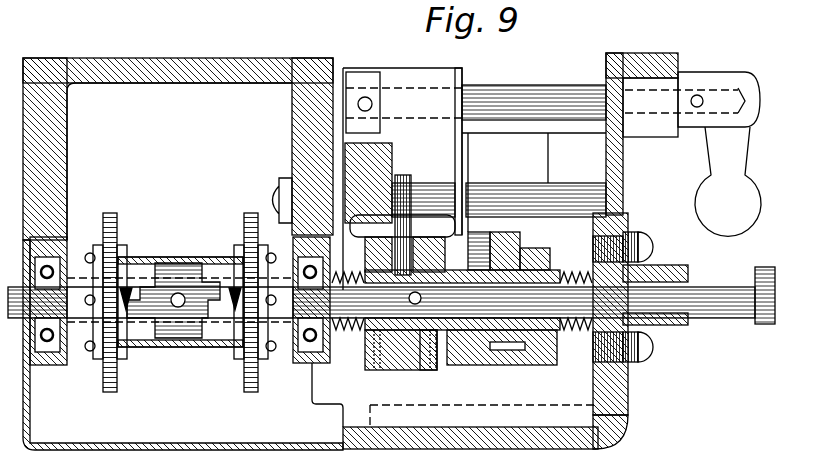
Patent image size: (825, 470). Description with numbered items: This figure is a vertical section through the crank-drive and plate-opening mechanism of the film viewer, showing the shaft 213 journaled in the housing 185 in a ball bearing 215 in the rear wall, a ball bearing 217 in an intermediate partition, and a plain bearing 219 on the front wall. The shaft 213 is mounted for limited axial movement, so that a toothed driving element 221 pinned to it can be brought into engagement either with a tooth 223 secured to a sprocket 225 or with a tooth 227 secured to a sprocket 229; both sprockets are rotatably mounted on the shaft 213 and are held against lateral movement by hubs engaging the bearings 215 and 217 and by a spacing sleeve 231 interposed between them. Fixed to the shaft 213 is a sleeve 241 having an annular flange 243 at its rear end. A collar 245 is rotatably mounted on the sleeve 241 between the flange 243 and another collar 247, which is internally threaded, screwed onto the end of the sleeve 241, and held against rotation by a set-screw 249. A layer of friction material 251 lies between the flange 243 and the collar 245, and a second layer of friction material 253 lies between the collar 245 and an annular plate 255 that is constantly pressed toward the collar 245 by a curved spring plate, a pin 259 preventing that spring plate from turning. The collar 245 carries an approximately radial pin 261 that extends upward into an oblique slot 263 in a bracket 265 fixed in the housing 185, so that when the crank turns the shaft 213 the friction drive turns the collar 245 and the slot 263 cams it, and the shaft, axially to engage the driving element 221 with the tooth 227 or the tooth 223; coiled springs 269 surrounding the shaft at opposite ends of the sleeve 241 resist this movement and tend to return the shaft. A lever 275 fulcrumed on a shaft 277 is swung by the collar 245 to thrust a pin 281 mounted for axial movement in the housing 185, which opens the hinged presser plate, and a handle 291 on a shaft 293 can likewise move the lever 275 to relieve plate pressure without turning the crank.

The housing 185 is at (55, 163).
The shaft 213 is at (130, 338).
The ball bearing 215 is at (68, 345).
The ball bearing 217 is at (294, 350).
The plain bearing 219 is at (662, 270).
The toothed driving element 221 is at (180, 335).
The tooth 223 is at (146, 262).
The sprocket 225 is at (112, 216).
The tooth 227 is at (238, 297).
The sprocket 229 is at (248, 392).
The spacing sleeve 231 is at (195, 262).
The sleeve 241 is at (520, 330).
The annular flange 243 is at (368, 362).
The collar 245 is at (428, 365).
The collar 247 is at (510, 352).
The set-screw 249 is at (478, 235).
The layer of friction material 251 is at (380, 372).
The layer of friction material 253 is at (450, 372).
The annular plate 255 is at (440, 367).
The pin 259 is at (472, 338).
The radial pin 261 is at (403, 175).
The oblique slot 263 is at (418, 210).
The bracket 265 is at (440, 228).
The coiled springs 269 is at (575, 266).
The lever 275 is at (461, 82).
The shaft 277 is at (574, 190).
The thrust pin 281 is at (367, 98).
The handle 291 is at (730, 226).
The shaft 293 is at (536, 88).